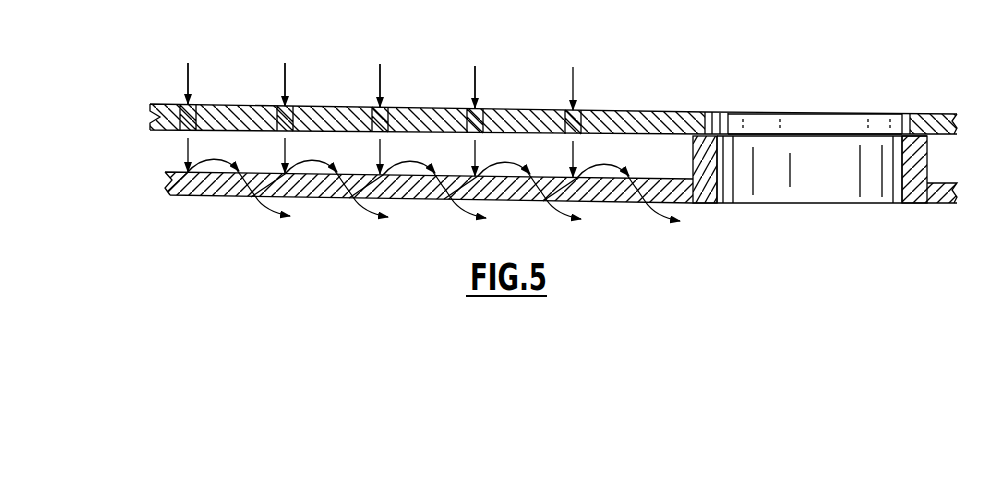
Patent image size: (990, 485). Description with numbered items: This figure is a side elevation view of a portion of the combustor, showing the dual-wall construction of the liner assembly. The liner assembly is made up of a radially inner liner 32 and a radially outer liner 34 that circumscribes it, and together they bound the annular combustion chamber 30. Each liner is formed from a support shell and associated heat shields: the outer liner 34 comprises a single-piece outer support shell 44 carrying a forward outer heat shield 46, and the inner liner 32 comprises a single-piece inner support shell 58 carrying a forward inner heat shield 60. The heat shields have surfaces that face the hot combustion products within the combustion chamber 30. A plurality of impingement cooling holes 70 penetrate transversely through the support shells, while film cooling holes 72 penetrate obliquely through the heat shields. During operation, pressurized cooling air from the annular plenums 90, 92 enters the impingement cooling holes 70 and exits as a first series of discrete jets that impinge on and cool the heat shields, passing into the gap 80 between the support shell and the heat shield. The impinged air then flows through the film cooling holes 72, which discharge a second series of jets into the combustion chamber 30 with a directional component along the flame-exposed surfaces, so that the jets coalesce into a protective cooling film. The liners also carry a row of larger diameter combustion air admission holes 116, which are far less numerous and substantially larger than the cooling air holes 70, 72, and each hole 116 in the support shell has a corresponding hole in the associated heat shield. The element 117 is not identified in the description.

The annular combustion chamber 30 is at (441, 255).
The radially inner liner 32 is at (644, 54).
The radially outer liner 34 is at (511, 134).
The outer support shell 44 is at (511, 107).
The forward outer heat shield 46 is at (517, 193).
The inner support shell 58 is at (152, 119).
The forward inner heat shield 60 is at (168, 186).
The impingement cooling holes 70 is at (370, 105).
The film cooling holes 72 is at (346, 199).
The gap 80 is at (367, 163).
The annular plenum 90 is at (558, 60).
The annular plenum 92 is at (380, 72).
The larger diameter combustion air admission holes 116 is at (861, 114).
The spacer ring 117 is at (696, 152).